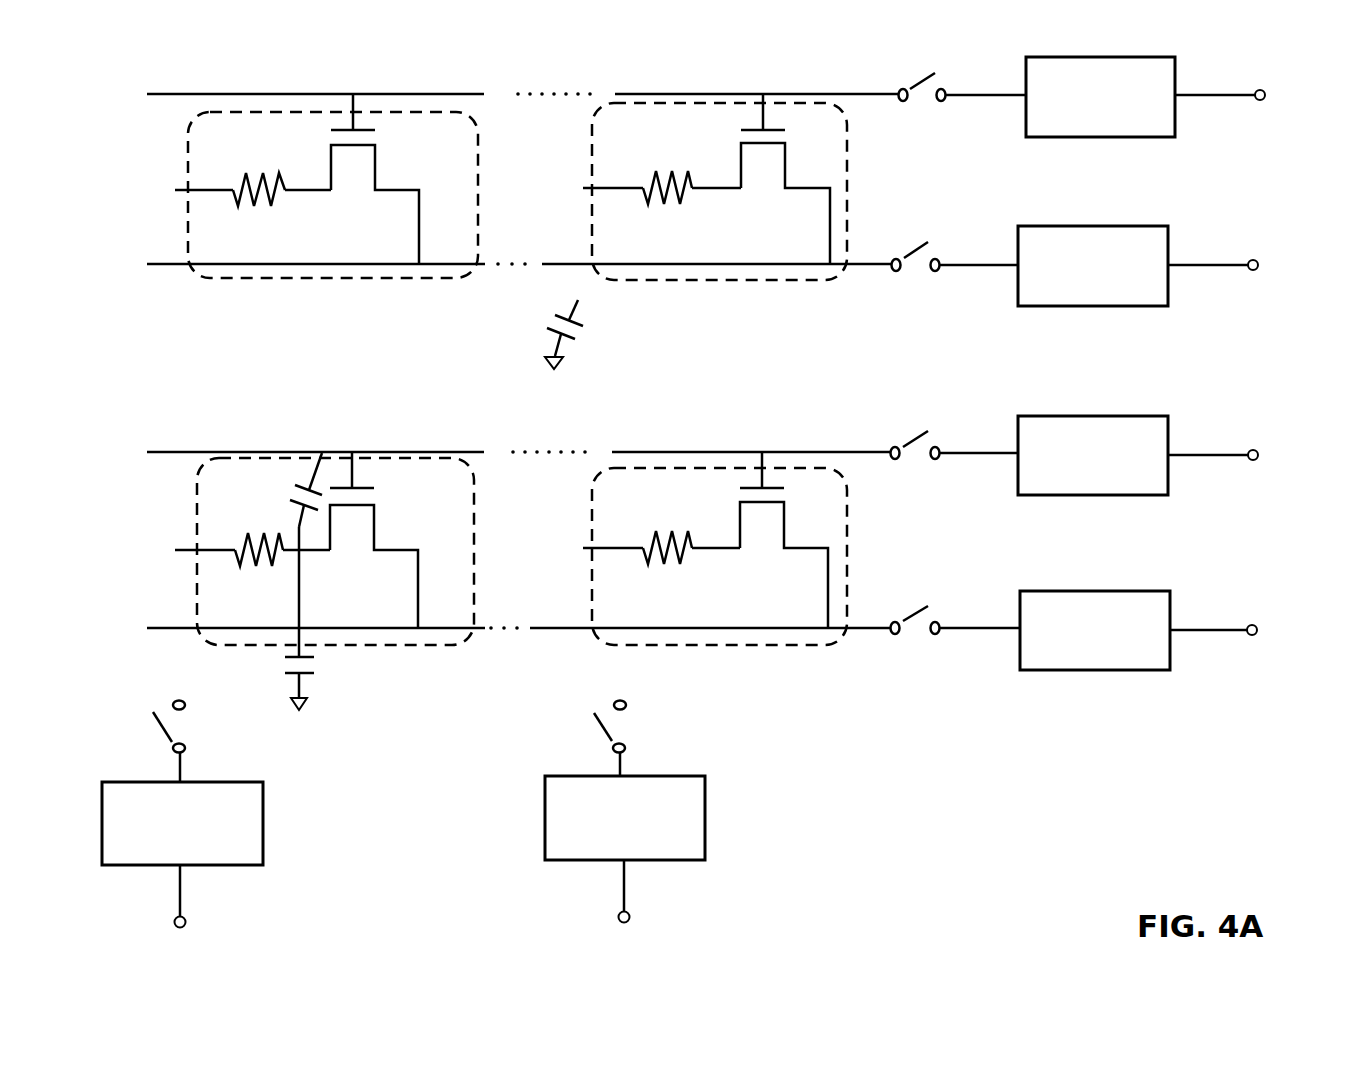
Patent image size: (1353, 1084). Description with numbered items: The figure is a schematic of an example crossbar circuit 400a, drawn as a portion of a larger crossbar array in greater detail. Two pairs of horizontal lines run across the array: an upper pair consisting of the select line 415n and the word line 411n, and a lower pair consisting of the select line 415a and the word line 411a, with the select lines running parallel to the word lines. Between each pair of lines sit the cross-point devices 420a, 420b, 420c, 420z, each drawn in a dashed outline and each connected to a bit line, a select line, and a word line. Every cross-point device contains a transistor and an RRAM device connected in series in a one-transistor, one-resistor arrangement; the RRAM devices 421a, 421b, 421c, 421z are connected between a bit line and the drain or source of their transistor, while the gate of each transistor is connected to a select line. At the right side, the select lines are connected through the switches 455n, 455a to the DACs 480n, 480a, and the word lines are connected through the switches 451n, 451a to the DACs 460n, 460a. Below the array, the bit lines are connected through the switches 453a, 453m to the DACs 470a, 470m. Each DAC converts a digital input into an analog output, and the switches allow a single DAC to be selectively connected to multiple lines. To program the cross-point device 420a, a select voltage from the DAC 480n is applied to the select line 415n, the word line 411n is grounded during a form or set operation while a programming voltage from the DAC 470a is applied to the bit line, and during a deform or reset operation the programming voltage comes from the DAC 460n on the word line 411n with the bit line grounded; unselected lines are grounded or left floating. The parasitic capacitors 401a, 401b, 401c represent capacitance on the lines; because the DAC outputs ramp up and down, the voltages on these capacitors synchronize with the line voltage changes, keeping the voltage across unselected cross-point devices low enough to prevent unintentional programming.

The crossbar circuit 400a is at (713, 66).
The select line 415n is at (493, 94).
The word line 411n is at (489, 264).
The select line 415a is at (489, 452).
The word line 411a is at (489, 628).
The cross-point device 420a is at (482, 168).
The cross-point device 420b is at (849, 180).
The cross-point device 420c is at (479, 544).
The cross-point device 420z is at (853, 532).
The RRAM device 421a is at (268, 206).
The RRAM device 421b is at (677, 205).
The RRAM device 421c is at (256, 566).
The RRAM device 421z is at (677, 564).
The switch 455n is at (914, 89).
The switch 455a is at (906, 442).
The switch 451n is at (906, 253).
The switch 451a is at (896, 619).
The DAC 480n is at (1069, 126).
The DAC 480a is at (1062, 485).
The DAC 460n is at (1062, 295).
The DAC 460a is at (1064, 660).
The DAC 470a is at (151, 855).
The DAC 470m is at (590, 849).
The switch 453a is at (194, 743).
The switch 453m is at (611, 745).
The parasitic capacitor 401a is at (292, 481).
The parasitic capacitor 401b is at (320, 677).
The parasitic capacitor 401c is at (535, 334).